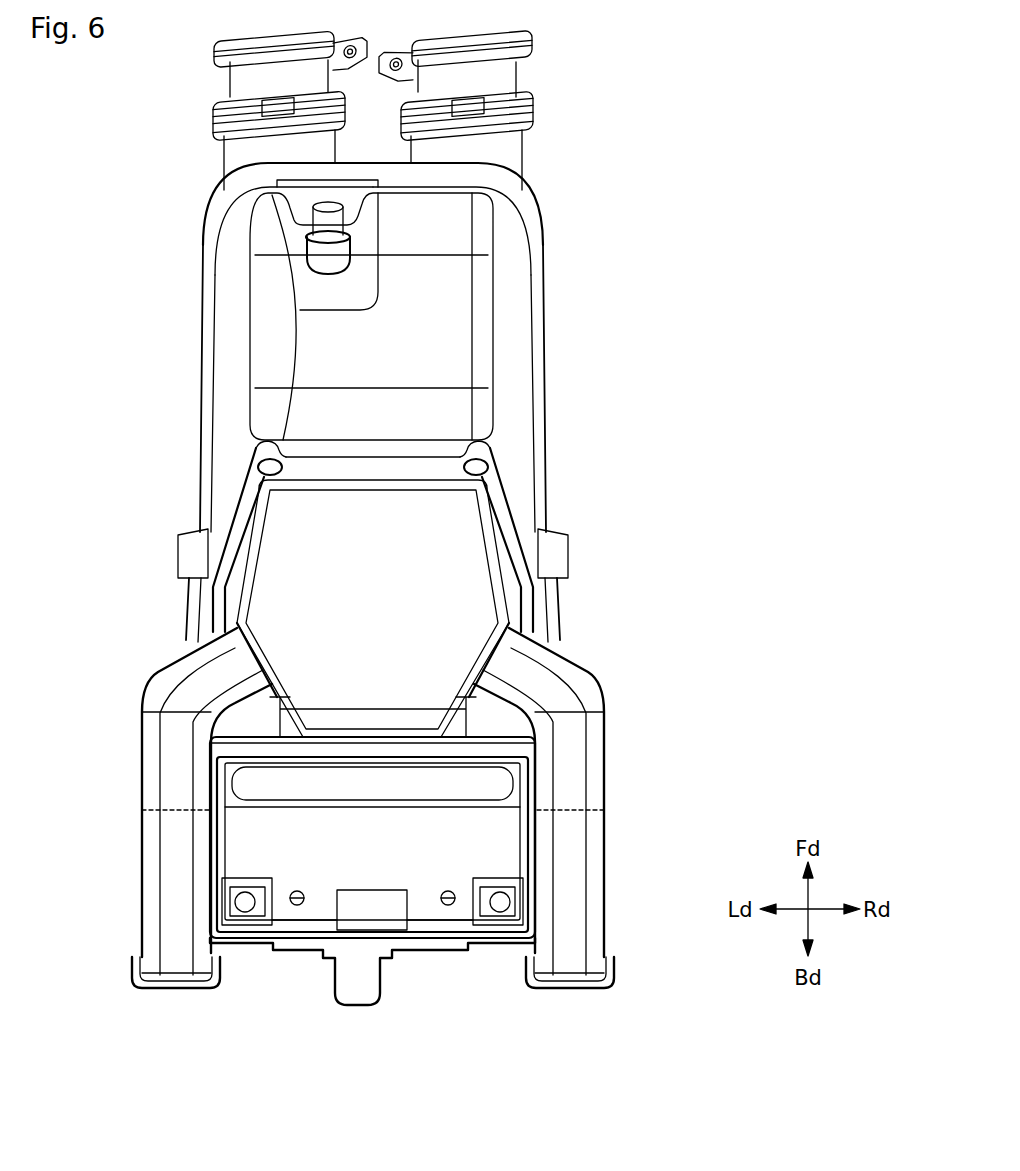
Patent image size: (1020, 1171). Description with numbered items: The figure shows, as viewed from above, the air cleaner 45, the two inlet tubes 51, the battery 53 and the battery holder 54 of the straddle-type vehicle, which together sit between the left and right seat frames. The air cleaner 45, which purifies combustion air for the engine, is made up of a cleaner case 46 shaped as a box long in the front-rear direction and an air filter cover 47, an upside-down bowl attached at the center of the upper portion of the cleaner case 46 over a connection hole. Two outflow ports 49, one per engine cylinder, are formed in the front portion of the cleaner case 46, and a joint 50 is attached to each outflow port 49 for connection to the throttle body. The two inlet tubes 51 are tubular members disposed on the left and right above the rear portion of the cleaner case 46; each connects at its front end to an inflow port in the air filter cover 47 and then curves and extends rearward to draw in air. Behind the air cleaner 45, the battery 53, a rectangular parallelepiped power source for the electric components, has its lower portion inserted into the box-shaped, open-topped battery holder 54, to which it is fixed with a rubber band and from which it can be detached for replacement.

The air cleaner 45 is at (563, 311).
The cleaner case 46 is at (315, 347).
The air filter cover 47 is at (423, 540).
The outflow port 49 is at (246, 150).
The joint 50 is at (245, 88).
The inlet tube 51 is at (178, 772).
The battery 53 is at (332, 868).
The battery holder 54 is at (413, 940).